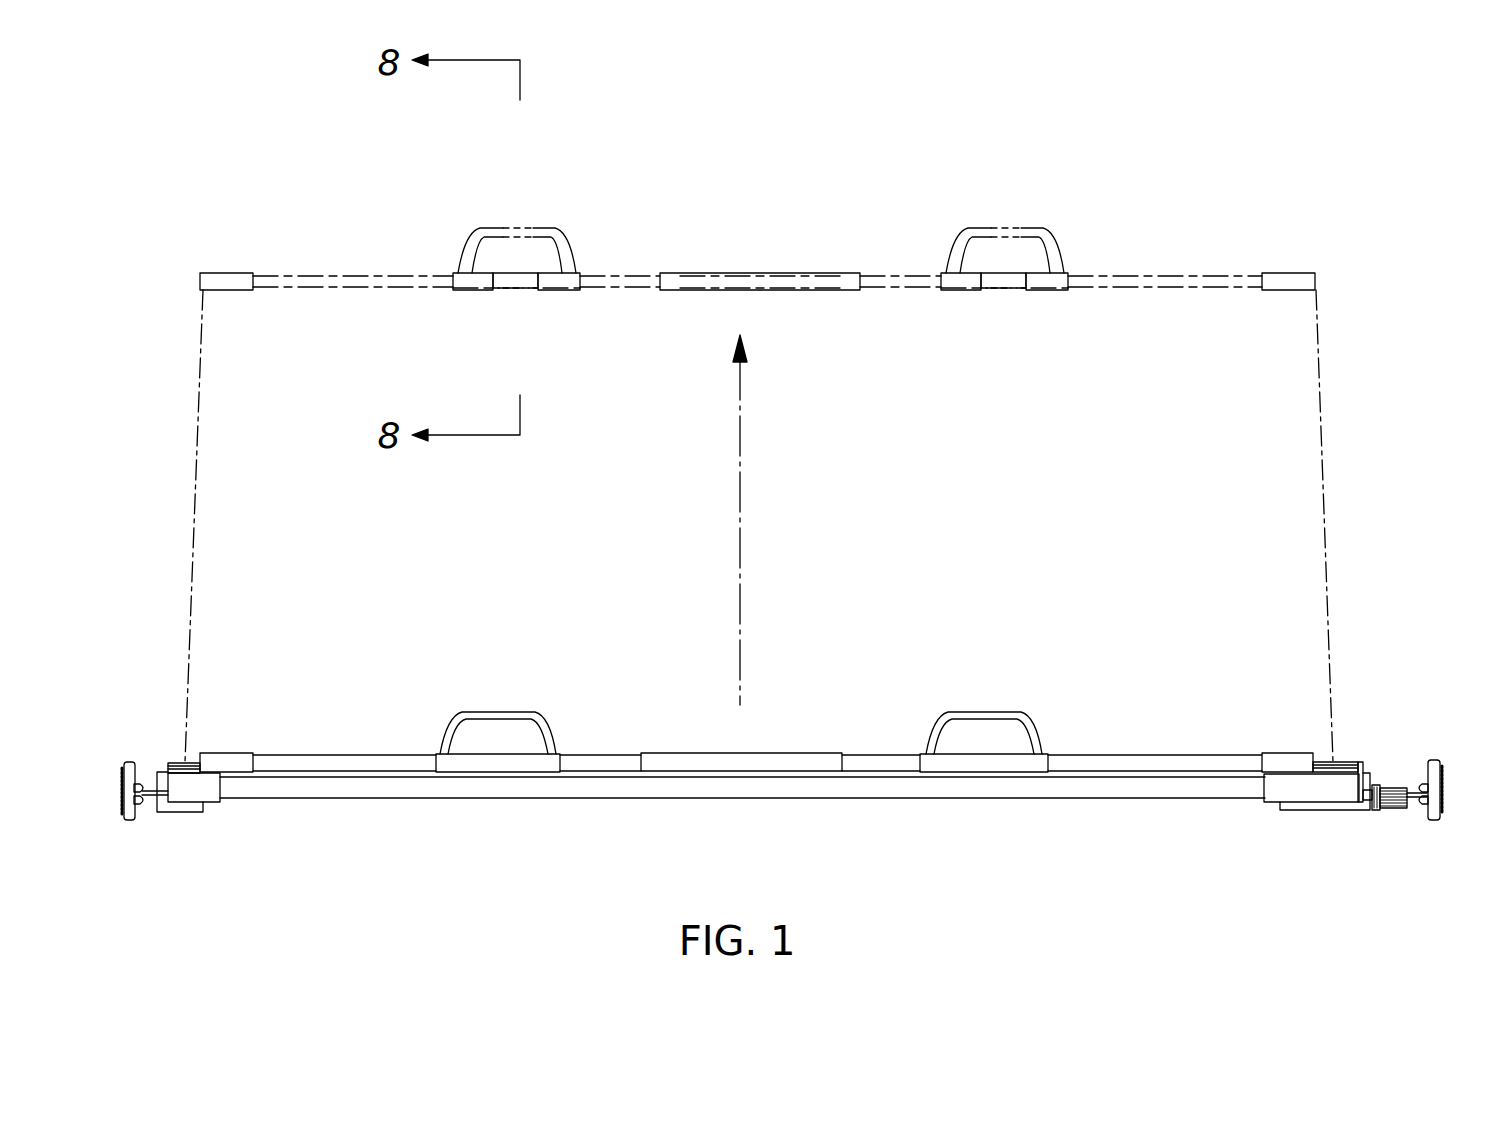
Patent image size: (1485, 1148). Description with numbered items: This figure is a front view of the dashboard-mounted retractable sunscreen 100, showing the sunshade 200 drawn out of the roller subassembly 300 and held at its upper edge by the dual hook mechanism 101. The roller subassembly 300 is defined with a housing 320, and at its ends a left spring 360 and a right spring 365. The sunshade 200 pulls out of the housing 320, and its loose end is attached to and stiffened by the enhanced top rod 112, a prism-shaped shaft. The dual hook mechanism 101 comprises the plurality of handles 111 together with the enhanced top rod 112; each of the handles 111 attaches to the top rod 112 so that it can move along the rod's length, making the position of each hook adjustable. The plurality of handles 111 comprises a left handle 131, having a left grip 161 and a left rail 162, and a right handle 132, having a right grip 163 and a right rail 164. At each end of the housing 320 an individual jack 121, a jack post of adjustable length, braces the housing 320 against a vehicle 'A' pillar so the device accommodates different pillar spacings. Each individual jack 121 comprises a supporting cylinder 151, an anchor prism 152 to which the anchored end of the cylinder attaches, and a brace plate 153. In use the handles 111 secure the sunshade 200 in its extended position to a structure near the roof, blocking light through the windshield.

The dashboard-mounted retractable sunscreen 100 is at (177, 178).
The dual hook mechanism 101 is at (1318, 280).
The plurality of handles 111 is at (970, 230).
The enhanced top rod 112 is at (736, 278).
The individual jack 121 is at (178, 812).
The left handle 131 is at (488, 228).
The right handle 132 is at (1050, 255).
The supporting cylinder 151 is at (150, 805).
The anchor prism 152 is at (196, 806).
The brace plate 153 is at (125, 762).
The left grip 161 is at (510, 228).
The left rail 162 is at (513, 289).
The right grip 163 is at (1019, 228).
The right rail 164 is at (997, 289).
The sunshade 200 is at (1250, 378).
The roller subassembly 300 is at (412, 798).
The housing 320 is at (488, 799).
The left spring 360 is at (192, 787).
The right spring 365 is at (1327, 790).